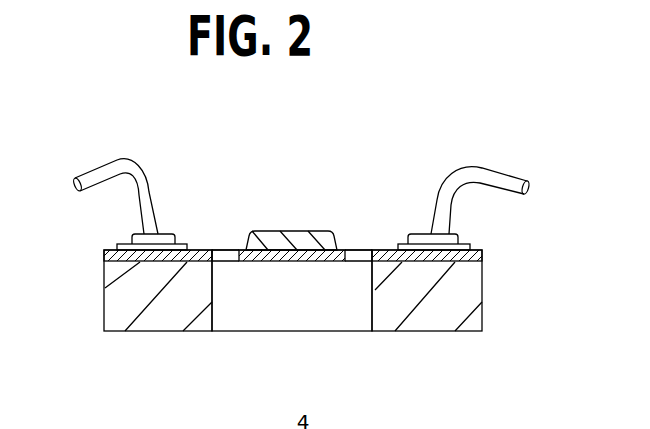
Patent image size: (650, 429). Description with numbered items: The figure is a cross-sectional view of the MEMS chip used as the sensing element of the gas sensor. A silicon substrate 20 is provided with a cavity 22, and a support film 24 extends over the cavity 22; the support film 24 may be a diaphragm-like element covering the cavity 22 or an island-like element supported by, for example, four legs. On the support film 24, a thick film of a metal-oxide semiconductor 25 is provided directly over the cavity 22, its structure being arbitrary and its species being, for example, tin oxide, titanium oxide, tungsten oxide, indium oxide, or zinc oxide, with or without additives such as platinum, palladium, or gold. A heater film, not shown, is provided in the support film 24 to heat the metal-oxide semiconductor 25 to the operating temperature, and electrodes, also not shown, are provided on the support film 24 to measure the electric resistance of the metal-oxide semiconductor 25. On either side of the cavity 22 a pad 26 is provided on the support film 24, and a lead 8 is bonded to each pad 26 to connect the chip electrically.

The lead 8 is at (110, 170).
The silicon substrate 20 is at (160, 317).
The cavity 22 is at (279, 317).
The support film 24 is at (140, 262).
The metal-oxide semiconductor 25 is at (293, 231).
The pad 26 is at (121, 243).